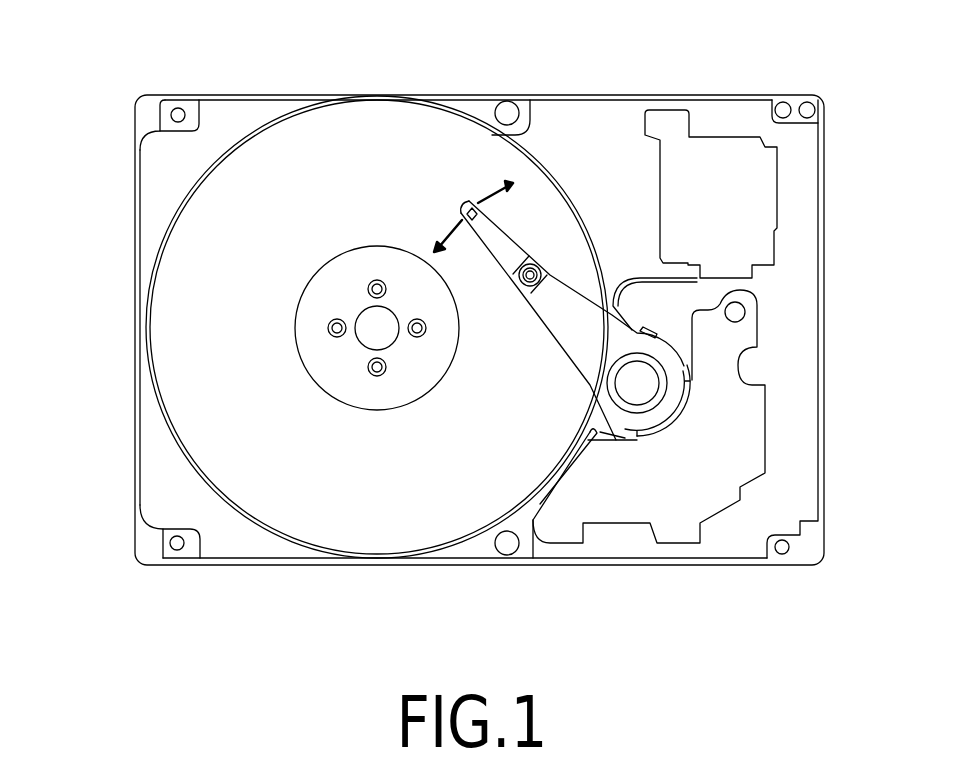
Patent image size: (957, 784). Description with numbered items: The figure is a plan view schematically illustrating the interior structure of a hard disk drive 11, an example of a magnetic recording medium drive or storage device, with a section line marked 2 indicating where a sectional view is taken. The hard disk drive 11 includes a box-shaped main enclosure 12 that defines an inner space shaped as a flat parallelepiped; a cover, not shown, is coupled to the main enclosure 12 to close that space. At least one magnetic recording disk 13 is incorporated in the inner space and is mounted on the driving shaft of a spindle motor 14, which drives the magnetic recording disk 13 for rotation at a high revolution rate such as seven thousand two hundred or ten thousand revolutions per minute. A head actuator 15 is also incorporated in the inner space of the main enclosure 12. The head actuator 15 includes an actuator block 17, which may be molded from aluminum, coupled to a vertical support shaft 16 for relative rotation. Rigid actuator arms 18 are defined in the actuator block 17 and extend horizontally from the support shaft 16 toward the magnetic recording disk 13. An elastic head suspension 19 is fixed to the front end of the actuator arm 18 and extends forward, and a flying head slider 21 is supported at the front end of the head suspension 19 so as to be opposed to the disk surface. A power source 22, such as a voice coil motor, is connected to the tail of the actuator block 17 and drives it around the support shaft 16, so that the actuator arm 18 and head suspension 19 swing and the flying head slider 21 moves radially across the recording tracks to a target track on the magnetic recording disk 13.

The hard disk drive 11 is at (380, 96).
The main enclosure 12 is at (137, 174).
The magnetic recording disk 13 is at (170, 250).
The spindle motor 14 is at (366, 347).
The head actuator 15 is at (568, 280).
The vertical support shaft 16 is at (658, 395).
The actuator block 17 is at (600, 406).
The actuator arm 18 is at (557, 327).
The head suspension 19 is at (502, 260).
The flying head slider 21 is at (462, 211).
The power source 22 is at (638, 433).
The section line 2- 2 is at (604, 0).